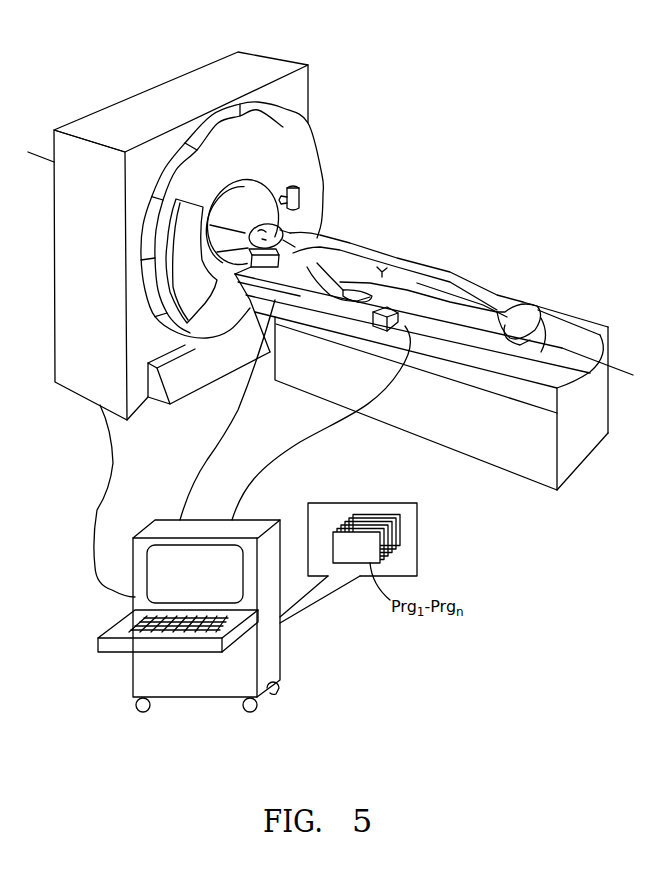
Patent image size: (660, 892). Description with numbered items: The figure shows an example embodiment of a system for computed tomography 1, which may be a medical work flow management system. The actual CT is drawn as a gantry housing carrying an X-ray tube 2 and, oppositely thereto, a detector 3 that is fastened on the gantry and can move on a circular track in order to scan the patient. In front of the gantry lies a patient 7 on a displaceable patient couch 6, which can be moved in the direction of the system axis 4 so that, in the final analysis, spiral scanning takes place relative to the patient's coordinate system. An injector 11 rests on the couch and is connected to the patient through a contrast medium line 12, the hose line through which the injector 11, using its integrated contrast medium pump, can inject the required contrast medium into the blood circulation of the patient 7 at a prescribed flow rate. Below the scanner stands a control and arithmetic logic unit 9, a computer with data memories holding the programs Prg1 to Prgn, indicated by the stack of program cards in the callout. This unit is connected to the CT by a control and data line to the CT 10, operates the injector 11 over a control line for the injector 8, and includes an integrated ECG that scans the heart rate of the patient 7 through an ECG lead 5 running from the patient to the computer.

The system for computed tomography 1 is at (441, 177).
The X-ray tube 2 is at (300, 197).
The detector 3 is at (188, 308).
The system axis 4 is at (633, 373).
The ECG lead 5 is at (207, 460).
The displaceable patient couch 6 is at (407, 413).
The patient 7 is at (318, 243).
The control line for the injector 8 is at (252, 478).
The control and arithmetic logic unit 9 is at (272, 657).
The control and data line to the CT 10 is at (110, 468).
The injector 11 is at (385, 307).
The contrast medium line 12 is at (333, 293).